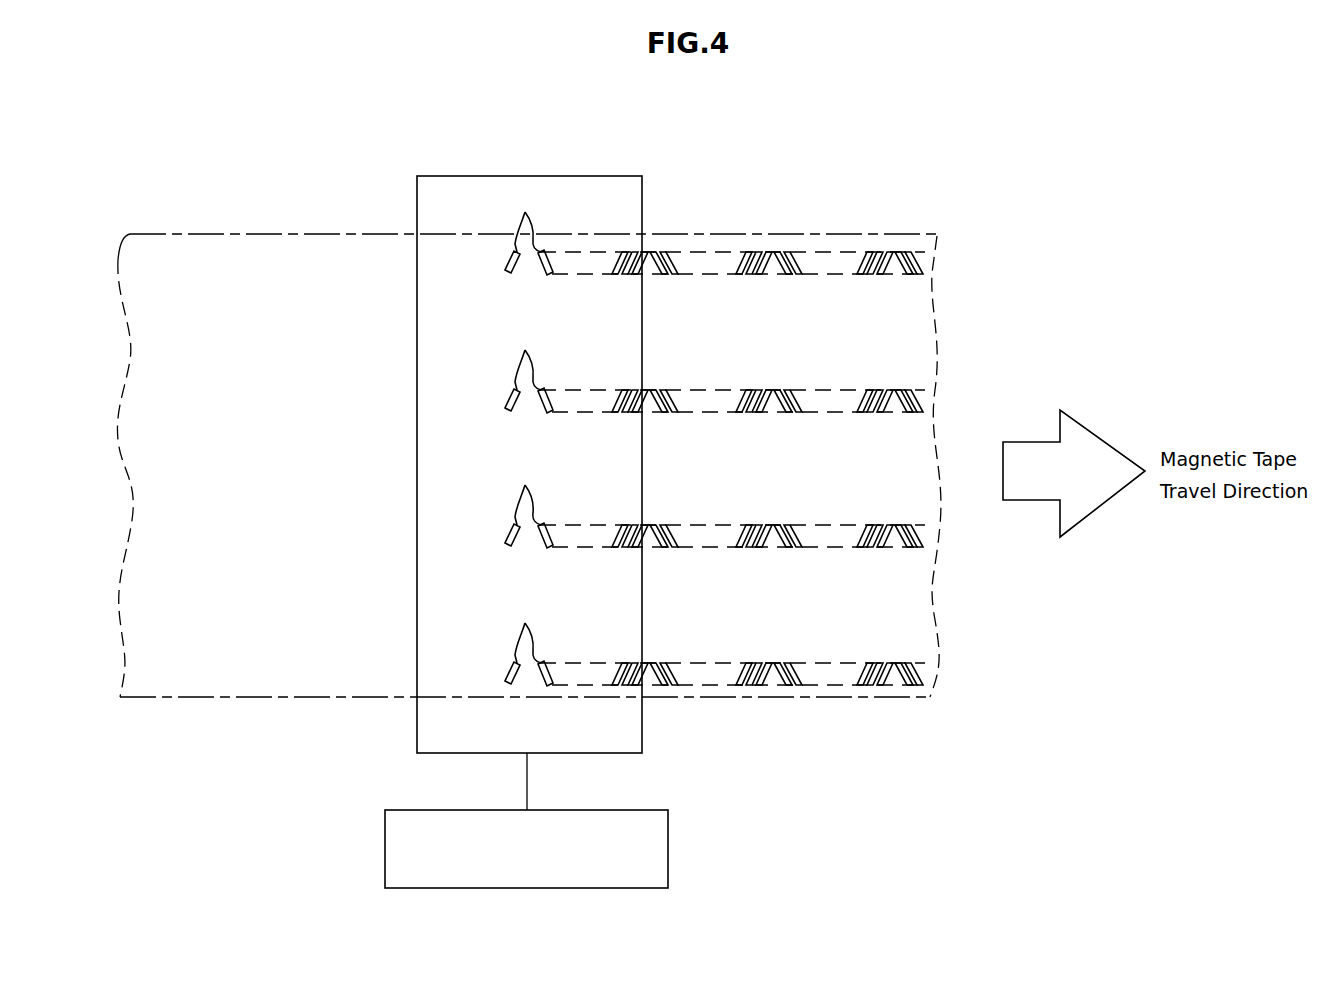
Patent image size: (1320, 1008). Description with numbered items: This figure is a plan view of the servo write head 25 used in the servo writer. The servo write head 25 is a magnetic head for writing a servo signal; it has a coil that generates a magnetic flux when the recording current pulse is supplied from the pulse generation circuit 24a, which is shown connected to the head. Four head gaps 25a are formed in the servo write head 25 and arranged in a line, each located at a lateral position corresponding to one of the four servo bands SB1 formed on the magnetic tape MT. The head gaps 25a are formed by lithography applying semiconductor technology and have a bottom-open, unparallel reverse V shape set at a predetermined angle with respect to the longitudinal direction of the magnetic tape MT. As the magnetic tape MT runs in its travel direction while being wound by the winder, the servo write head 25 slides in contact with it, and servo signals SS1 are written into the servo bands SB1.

The magnetic tape MT is at (293, 233).
The head gap 25a is at (529, 436).
The servo signal SS1 is at (947, 266).
The servo band SB1 is at (823, 275).
The servo write head 25 is at (645, 730).
The pulse generation circuit 24a is at (668, 838).